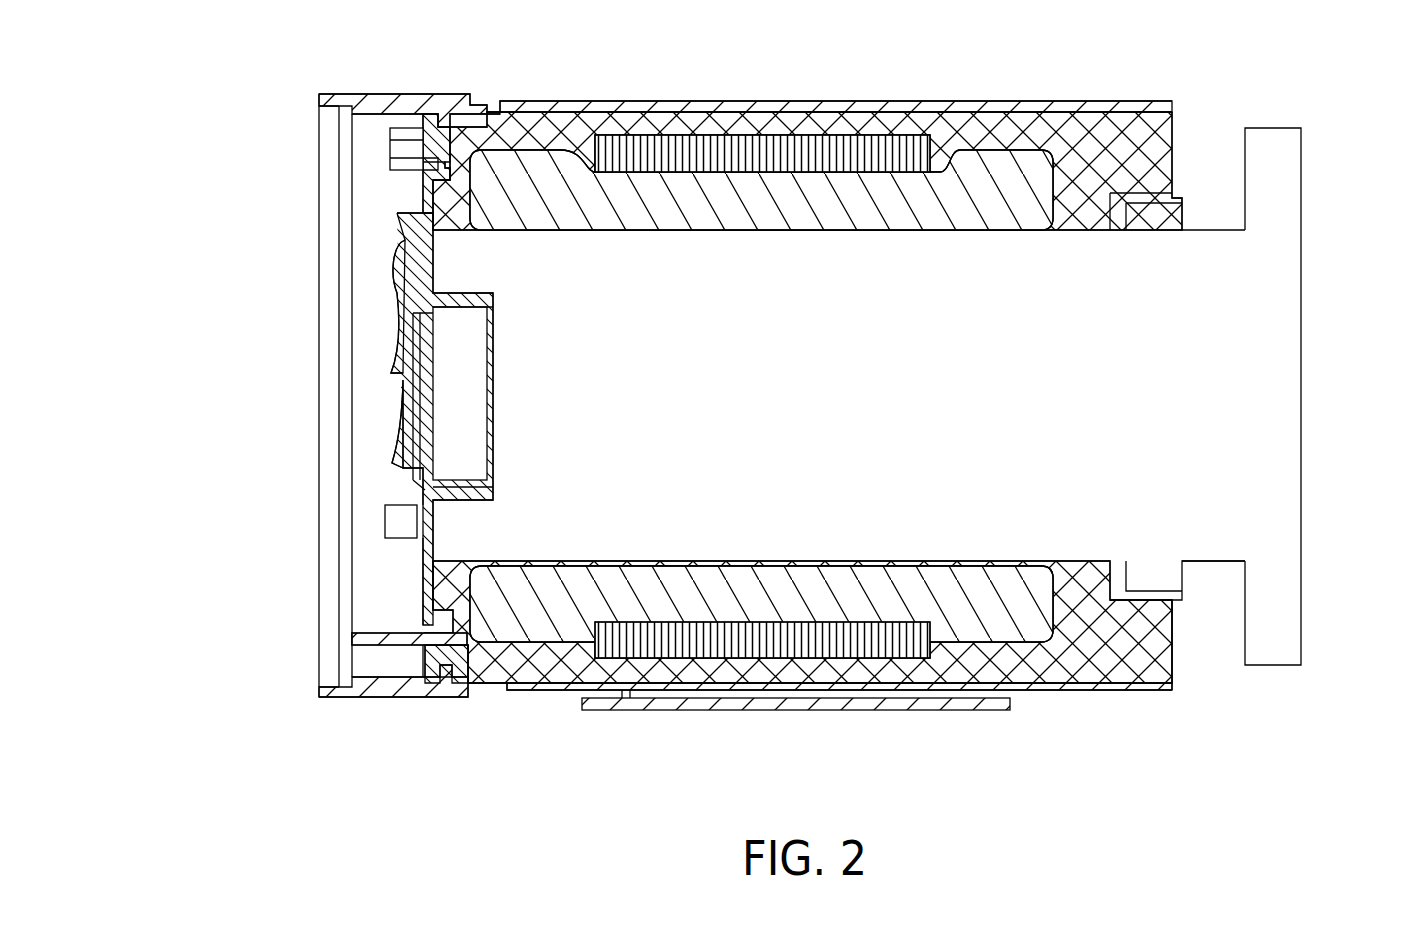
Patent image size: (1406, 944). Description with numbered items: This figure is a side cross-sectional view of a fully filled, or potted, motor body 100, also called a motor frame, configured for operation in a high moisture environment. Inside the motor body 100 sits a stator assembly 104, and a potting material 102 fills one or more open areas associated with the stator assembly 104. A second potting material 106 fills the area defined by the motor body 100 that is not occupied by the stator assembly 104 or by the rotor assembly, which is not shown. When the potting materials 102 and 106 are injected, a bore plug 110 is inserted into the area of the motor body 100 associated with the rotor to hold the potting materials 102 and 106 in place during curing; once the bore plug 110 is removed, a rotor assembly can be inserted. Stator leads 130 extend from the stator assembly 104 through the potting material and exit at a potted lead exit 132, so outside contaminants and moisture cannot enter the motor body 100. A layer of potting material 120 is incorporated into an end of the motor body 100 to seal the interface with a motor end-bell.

The motor body 100 is at (180, 372).
The potting material 102 is at (1038, 619).
The stator assembly 104 is at (605, 645).
The potting material 106 is at (1120, 150).
The bore plug 110 is at (1301, 365).
The layer of potting material 120 is at (325, 238).
The stator leads 130 is at (340, 638).
The potted lead exit 132 is at (428, 657).